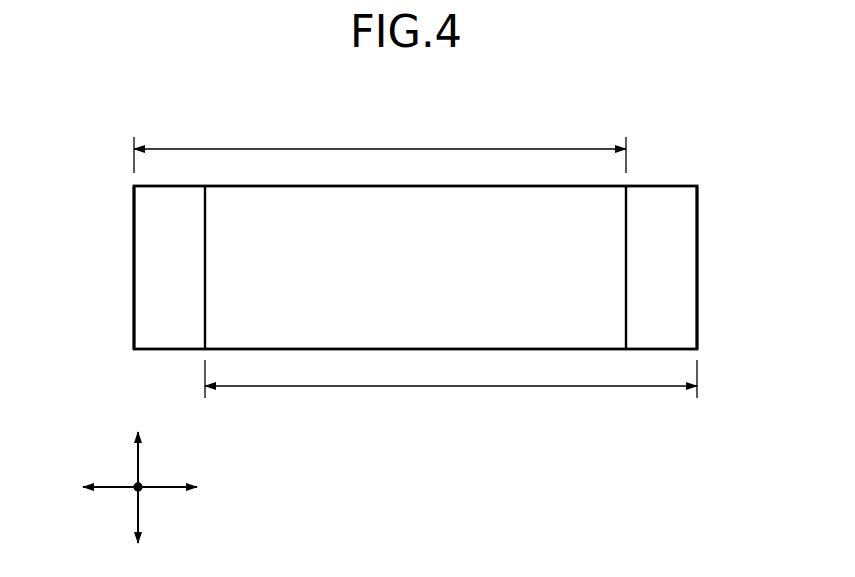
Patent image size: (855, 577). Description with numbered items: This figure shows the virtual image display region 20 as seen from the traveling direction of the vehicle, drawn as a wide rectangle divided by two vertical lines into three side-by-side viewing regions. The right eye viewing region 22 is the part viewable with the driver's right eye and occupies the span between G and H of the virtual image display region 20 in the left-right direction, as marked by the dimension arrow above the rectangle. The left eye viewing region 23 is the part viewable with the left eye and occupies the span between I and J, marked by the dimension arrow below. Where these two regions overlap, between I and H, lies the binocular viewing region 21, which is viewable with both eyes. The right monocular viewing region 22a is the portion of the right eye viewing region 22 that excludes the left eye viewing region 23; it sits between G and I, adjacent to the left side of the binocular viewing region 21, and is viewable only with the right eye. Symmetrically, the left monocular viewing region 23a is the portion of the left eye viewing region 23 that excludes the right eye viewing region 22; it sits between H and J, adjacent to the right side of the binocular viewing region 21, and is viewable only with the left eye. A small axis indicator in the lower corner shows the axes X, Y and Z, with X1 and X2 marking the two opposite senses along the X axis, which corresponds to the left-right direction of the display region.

The virtual image display region 20 is at (630, 178).
The binocular viewing region 21 is at (218, 311).
The right eye viewing region 22 is at (378, 149).
The right monocular viewing region 22a is at (146, 199).
The left eye viewing region 23 is at (532, 387).
The left monocular viewing region 23a is at (683, 200).
The position G is at (133, 237).
The position I is at (205, 270).
The position J is at (697, 239).
The position H is at (626, 270).
The X axis X is at (158, 488).
The Y axis Y is at (133, 494).
The Z axis Z is at (140, 460).
The X1 direction X1 is at (94, 488).
The X2 direction X2 is at (183, 488).